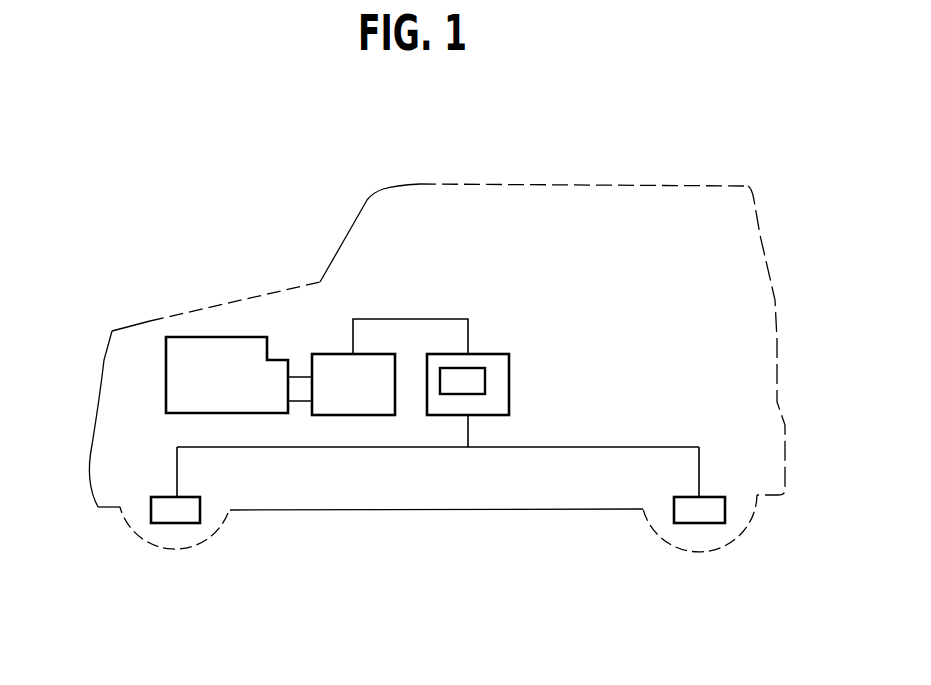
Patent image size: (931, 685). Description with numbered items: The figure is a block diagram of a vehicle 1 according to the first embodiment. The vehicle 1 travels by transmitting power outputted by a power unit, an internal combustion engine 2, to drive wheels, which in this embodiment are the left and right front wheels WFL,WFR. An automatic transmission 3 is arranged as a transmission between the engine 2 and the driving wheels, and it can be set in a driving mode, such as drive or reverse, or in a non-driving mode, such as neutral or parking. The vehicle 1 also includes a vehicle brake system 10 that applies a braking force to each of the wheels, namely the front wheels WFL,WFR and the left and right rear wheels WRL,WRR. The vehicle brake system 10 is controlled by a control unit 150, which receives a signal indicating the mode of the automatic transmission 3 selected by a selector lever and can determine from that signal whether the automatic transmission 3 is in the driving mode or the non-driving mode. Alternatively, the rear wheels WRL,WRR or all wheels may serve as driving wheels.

The vehicle 1 is at (592, 184).
The engine 2 is at (218, 337).
The automatic transmission 3 is at (333, 354).
The vehicle brake system 10 is at (512, 386).
The control unit 150 is at (478, 368).
The left front wheel and right front wheel WFL,WFR is at (180, 552).
The left rear wheel and right rear wheel WRL,WRR is at (697, 550).